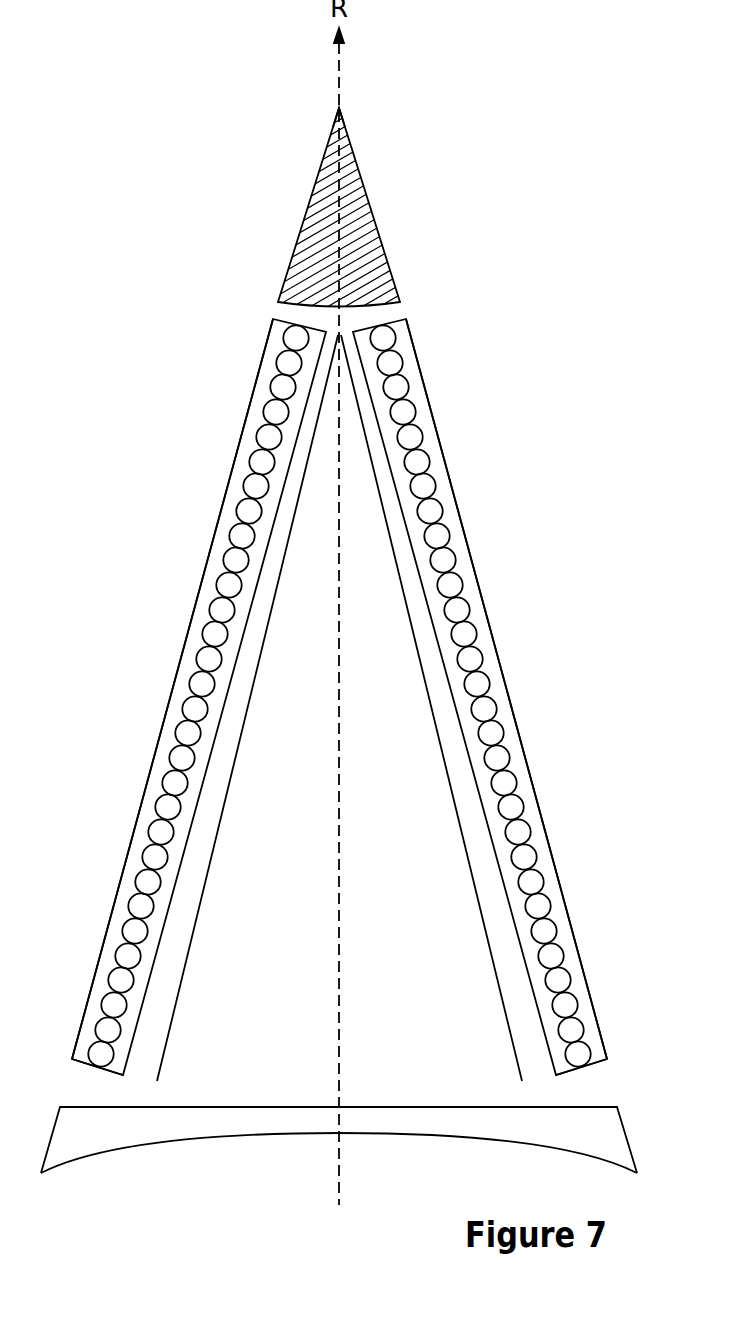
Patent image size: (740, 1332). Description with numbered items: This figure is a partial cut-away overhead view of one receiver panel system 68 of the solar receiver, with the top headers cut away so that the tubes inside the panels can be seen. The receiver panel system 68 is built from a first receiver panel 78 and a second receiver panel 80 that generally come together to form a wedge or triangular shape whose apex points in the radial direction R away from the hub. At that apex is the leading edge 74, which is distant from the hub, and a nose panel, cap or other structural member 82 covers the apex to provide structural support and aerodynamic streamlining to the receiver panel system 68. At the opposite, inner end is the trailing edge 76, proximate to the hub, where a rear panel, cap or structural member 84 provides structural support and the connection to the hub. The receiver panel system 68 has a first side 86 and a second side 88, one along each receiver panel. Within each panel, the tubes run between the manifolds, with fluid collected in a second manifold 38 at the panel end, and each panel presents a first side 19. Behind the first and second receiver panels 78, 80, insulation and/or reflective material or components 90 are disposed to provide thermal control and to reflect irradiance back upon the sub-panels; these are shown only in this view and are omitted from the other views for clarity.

The receiver panel system 68 is at (535, 278).
The leading edge 74 is at (340, 106).
The nose panel, cap or other structural member 82 is at (366, 187).
The first receiver panel 78 is at (218, 512).
The second receiver panel 80 is at (452, 471).
The first side 86 is at (170, 690).
The second side 88 is at (510, 700).
The second manifold 38 is at (99, 956).
The insulation and/or reflective material or components 90 is at (191, 937).
The first side 19 is at (211, 590).
The rear panel, cap or structural member 84 is at (371, 1152).
The trailing edge 76 is at (248, 1135).